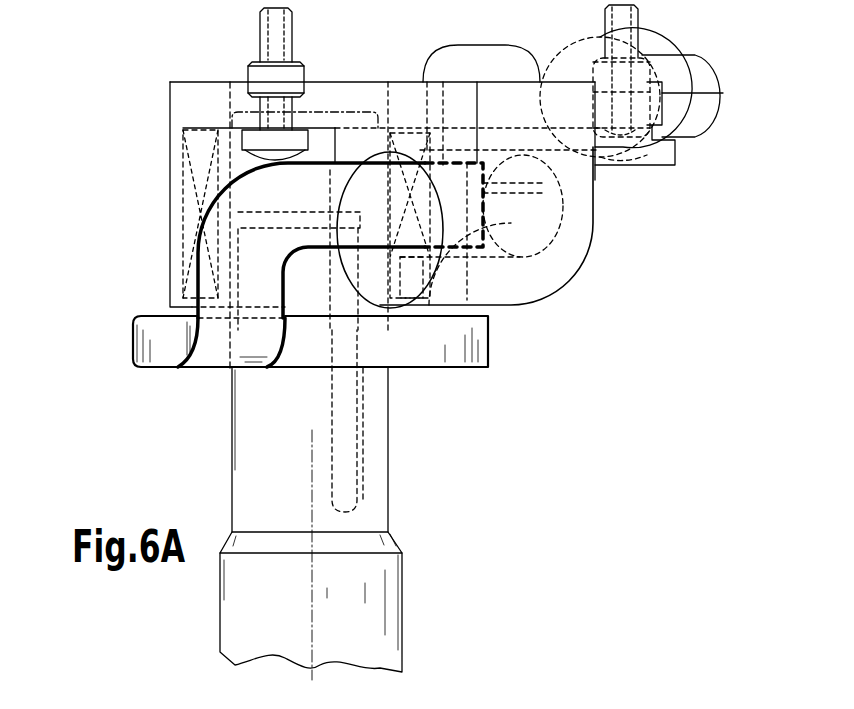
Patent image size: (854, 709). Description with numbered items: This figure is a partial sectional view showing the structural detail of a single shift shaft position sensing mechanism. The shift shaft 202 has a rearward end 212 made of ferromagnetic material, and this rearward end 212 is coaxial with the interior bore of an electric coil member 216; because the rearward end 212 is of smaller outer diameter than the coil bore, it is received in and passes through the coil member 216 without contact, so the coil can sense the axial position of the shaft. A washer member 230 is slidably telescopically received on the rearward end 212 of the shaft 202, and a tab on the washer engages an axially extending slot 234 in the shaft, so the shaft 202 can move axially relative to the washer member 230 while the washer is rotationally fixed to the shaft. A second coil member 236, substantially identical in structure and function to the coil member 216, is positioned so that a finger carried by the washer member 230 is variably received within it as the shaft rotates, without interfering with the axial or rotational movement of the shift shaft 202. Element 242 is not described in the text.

The shift shaft 202 is at (378, 620).
The rearward end of the shift shaft 212 is at (168, 398).
The electric coil member 216 is at (168, 208).
The washer member 230 is at (467, 344).
The axially extending slot 234 is at (373, 435).
The second coil member 236 is at (585, 272).
The chamfered collar 242 is at (312, 602).